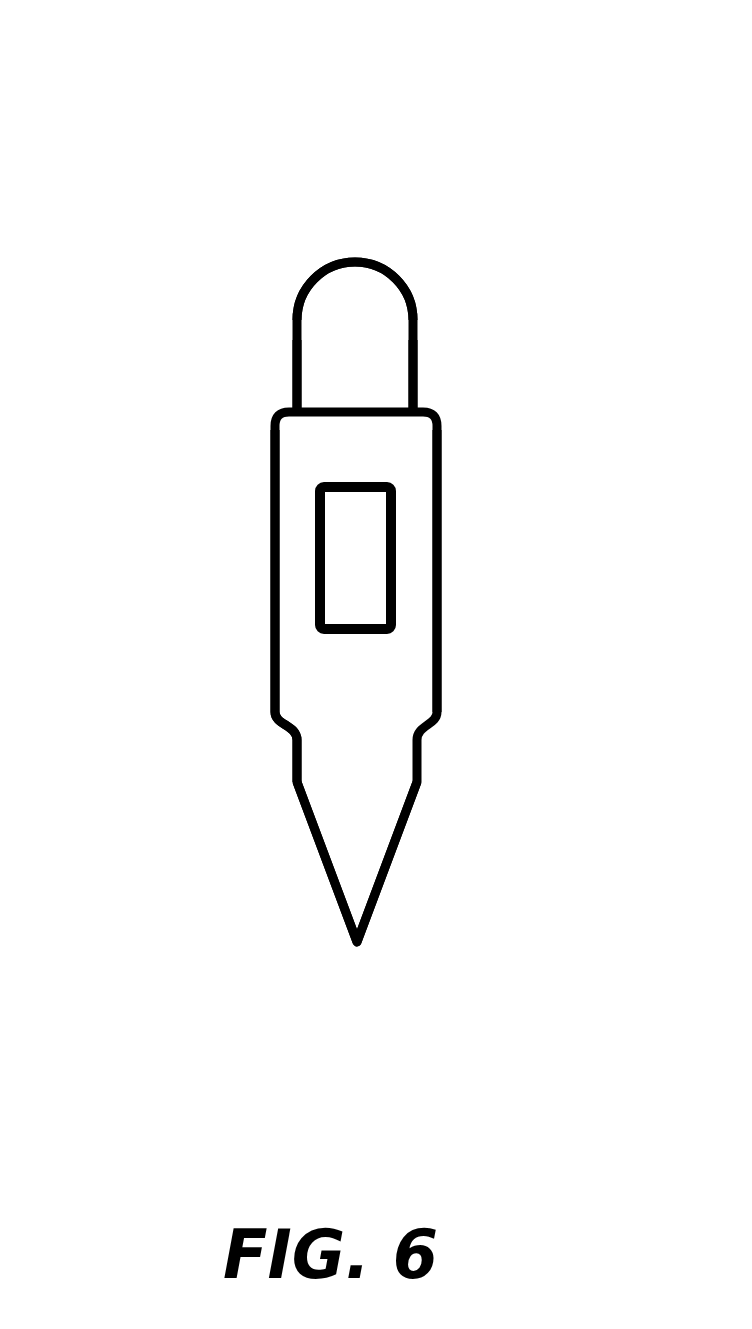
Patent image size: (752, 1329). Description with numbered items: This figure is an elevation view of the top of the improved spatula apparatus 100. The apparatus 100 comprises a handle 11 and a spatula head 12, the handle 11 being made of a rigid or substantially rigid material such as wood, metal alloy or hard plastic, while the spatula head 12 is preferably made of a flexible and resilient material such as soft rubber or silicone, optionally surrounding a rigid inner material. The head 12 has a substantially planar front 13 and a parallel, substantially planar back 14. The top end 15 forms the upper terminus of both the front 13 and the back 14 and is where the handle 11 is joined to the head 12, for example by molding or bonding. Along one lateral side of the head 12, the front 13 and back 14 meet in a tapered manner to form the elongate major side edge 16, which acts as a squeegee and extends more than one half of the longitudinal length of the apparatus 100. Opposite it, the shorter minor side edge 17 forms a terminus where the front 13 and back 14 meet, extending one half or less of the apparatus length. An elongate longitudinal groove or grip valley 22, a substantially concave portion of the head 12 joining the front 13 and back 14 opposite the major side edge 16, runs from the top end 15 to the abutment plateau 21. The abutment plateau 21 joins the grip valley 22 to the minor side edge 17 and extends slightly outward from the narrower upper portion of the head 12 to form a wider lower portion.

The spatula apparatus 100 is at (107, 105).
The handle 11 is at (357, 570).
The spatula head 12 is at (505, 392).
The front 13 is at (443, 557).
The back 14 is at (272, 553).
The top end 15 is at (337, 683).
The elongate major side edge 16 is at (357, 945).
The minor side edge 17 is at (357, 262).
The abutment plateau 21 is at (365, 335).
The grip valley 22 is at (347, 407).